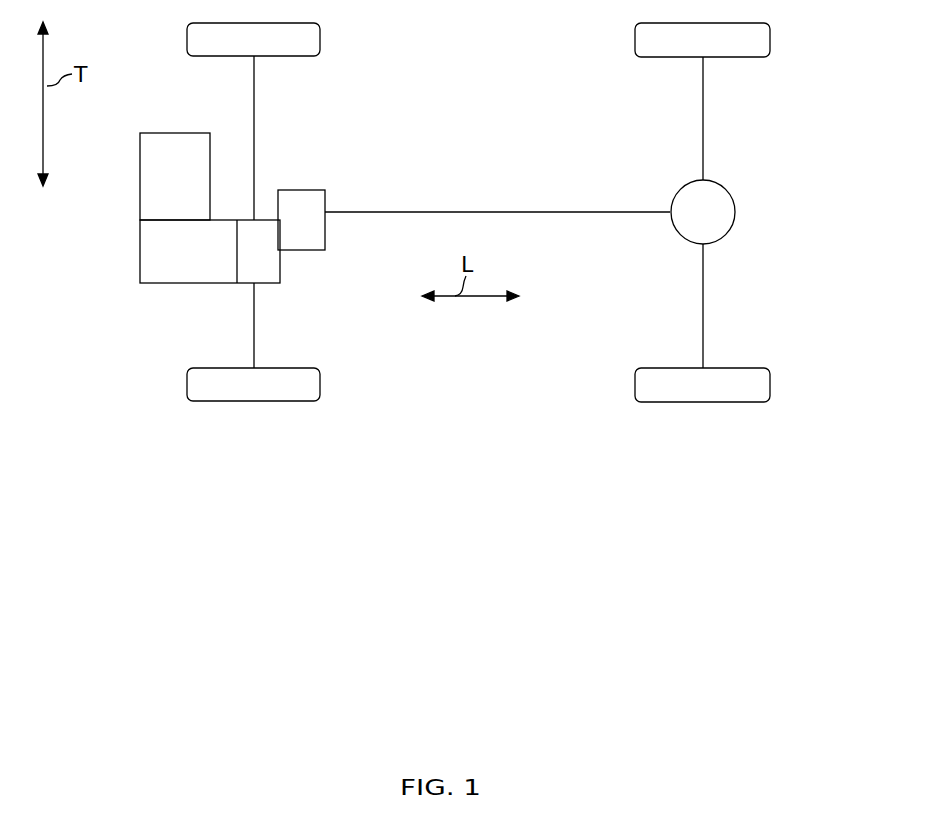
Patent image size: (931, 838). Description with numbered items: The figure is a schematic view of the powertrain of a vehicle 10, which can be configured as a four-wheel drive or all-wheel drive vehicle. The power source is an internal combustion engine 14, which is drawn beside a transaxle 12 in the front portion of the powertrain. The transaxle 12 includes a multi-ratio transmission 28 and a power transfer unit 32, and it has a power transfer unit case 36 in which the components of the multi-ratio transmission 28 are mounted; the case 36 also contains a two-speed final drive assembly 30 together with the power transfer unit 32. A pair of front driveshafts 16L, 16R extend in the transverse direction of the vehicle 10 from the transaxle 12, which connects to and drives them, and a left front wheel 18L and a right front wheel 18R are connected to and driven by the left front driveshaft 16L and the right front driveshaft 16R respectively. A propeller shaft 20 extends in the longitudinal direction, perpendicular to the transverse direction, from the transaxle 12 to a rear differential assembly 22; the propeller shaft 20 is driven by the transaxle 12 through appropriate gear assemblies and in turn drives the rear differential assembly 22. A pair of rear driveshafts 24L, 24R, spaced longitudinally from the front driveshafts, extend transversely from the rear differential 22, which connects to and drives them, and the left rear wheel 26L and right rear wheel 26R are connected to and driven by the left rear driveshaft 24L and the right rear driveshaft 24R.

The vehicle 10 is at (117, 193).
The transaxle 12 is at (136, 252).
The internal combustion engine 14 is at (139, 143).
The right front driveshaft 16R is at (255, 128).
The left front driveshaft 16L is at (255, 336).
The right front wheel 18R is at (320, 48).
The left front wheel 18L is at (320, 380).
The propeller shaft 20 is at (478, 212).
The rear differential assembly 22 is at (735, 212).
The right rear driveshaft 24R is at (704, 120).
The left rear driveshaft 24L is at (704, 330).
The right rear wheel 26R is at (770, 40).
The left rear wheel 26L is at (770, 380).
The multi-ratio transmission 28 is at (152, 290).
The two-speed final drive assembly 30 is at (265, 275).
The power transfer unit 32 is at (315, 235).
The power transfer unit case 36 is at (302, 190).